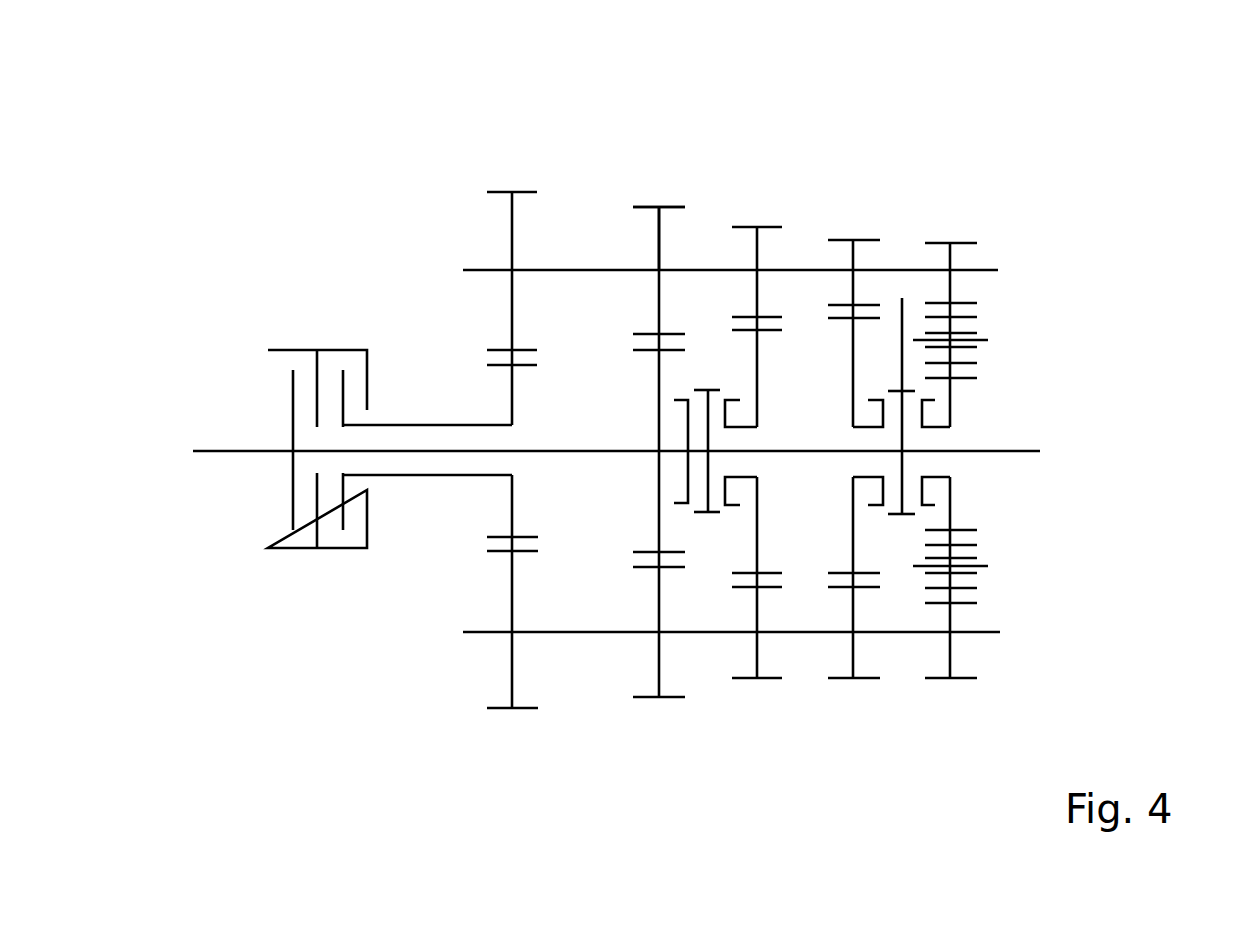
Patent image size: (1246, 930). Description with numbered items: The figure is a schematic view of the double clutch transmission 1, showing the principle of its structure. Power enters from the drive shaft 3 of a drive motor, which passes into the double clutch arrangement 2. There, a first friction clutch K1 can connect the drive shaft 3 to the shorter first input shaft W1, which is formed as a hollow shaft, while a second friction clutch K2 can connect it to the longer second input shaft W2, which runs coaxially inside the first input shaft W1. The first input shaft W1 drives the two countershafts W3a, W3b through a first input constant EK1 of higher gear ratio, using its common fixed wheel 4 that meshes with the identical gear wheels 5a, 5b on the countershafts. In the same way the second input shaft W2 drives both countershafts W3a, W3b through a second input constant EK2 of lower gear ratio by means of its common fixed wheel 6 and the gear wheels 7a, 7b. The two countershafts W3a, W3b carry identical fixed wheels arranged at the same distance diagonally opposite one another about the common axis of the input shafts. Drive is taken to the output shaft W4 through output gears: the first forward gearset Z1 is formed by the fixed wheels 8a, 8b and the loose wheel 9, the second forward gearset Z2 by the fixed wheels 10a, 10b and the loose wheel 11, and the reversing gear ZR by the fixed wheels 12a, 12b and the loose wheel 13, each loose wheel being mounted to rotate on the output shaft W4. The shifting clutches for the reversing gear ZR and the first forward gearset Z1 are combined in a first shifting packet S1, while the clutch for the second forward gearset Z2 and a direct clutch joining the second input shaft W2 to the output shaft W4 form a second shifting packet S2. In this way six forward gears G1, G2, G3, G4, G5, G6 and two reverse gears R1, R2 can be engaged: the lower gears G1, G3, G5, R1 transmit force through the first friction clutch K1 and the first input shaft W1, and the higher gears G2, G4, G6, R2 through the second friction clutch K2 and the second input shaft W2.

The double clutch transmission 1 is at (238, 707).
The double clutch arrangement 2 is at (266, 393).
The drive shaft 3 is at (227, 451).
The common fixed wheel 4 is at (512, 397).
The first friction clutch K1 is at (367, 377).
The second friction clutch K2 is at (268, 390).
The first input shaft W1 is at (455, 425).
The second input shaft W2 is at (443, 452).
The first countershaft W3a is at (478, 270).
The second countershaft W3b is at (487, 632).
The output shaft W4 is at (985, 447).
The first input constant EK1 is at (436, 434).
The second input constant EK2 is at (610, 435).
The gear wheel 5a is at (513, 240).
The gear wheel 5b is at (512, 668).
The common fixed wheel 6 is at (659, 500).
The gear wheel 7a is at (658, 250).
The gear wheel 7b is at (659, 655).
The fixed wheel 8a is at (873, 211).
The fixed wheel 8b is at (857, 645).
The loose wheel 9 is at (853, 522).
The fixed wheel 10a is at (753, 255).
The fixed wheel 10b is at (750, 648).
The loose wheel 11 is at (760, 385).
The fixed wheel 12a is at (953, 258).
The fixed wheel 12b is at (950, 640).
The loose wheel 13 is at (950, 507).
The first shifting packet S1 is at (902, 300).
The second shifting packet S2 is at (710, 512).
The first forward gearset Z1 is at (861, 640).
The second forward gearset Z2 is at (733, 640).
The reversing gear ZR is at (1021, 640).
The first forward gear G1 is at (857, 232).
The second forward gear G2 is at (857, 232).
The third forward gear G3 is at (754, 257).
The fourth forward gear G4 is at (754, 257).
The fifth forward gear G5 is at (653, 153).
The sixth forward gear G6 is at (653, 153).
The first reverse gear R1 is at (1011, 257).
The second reverse gear R2 is at (1011, 257).